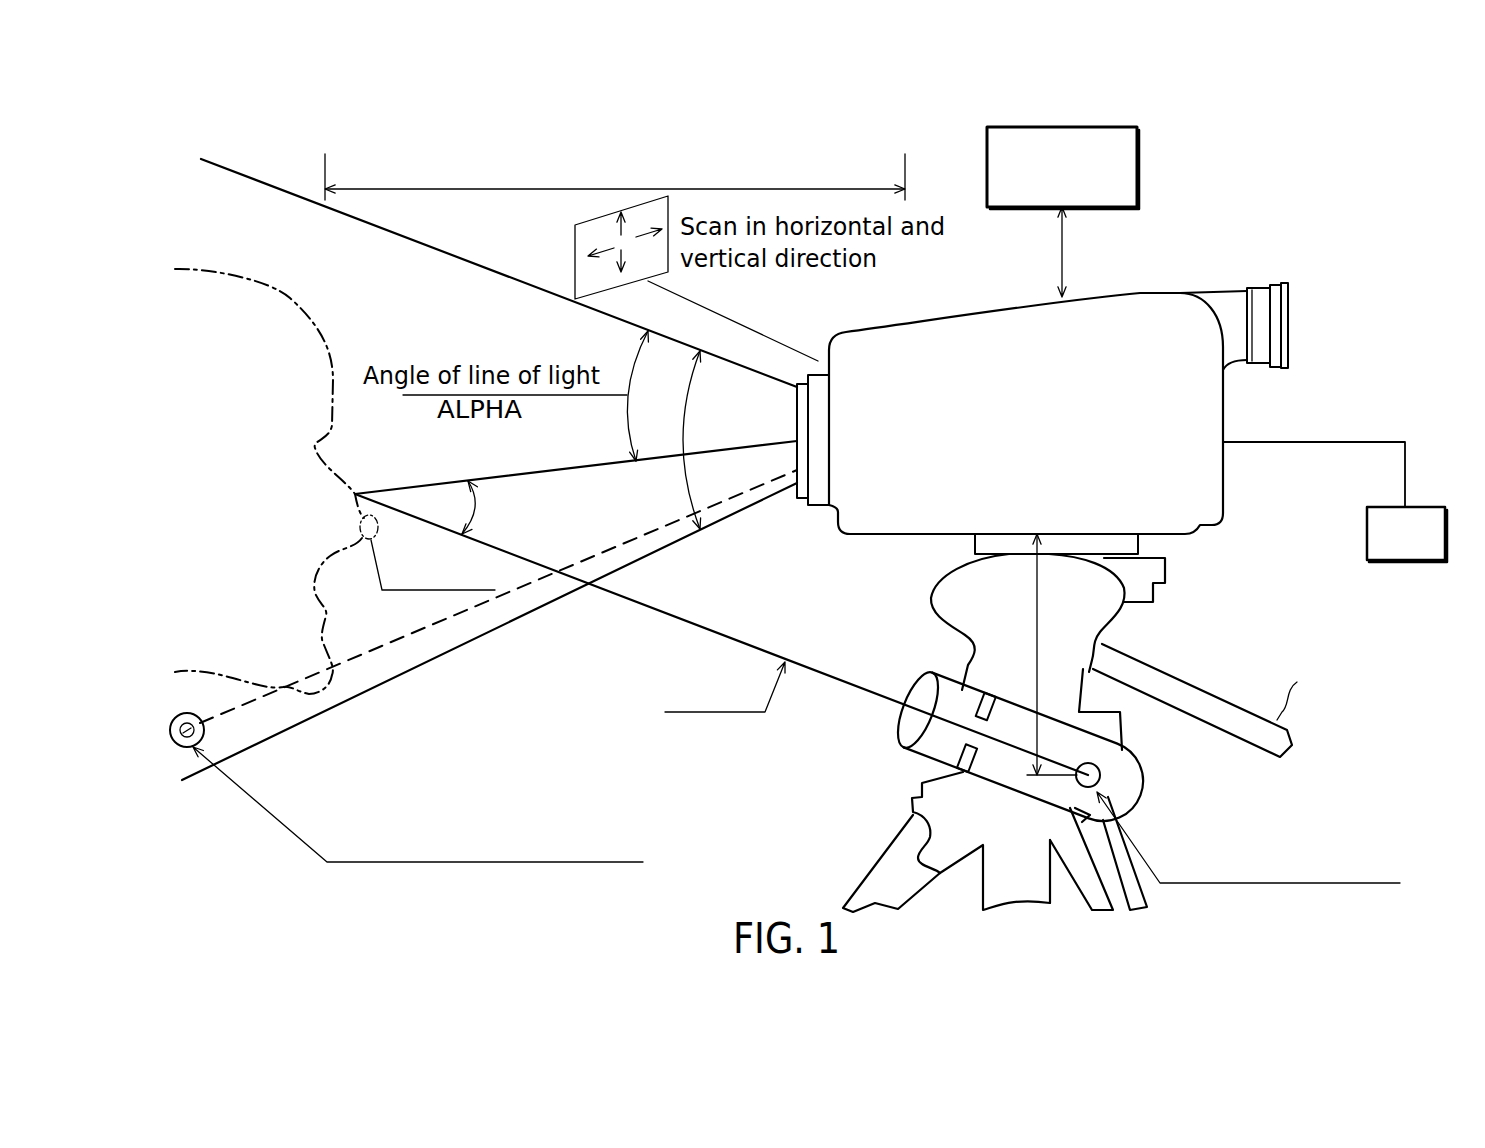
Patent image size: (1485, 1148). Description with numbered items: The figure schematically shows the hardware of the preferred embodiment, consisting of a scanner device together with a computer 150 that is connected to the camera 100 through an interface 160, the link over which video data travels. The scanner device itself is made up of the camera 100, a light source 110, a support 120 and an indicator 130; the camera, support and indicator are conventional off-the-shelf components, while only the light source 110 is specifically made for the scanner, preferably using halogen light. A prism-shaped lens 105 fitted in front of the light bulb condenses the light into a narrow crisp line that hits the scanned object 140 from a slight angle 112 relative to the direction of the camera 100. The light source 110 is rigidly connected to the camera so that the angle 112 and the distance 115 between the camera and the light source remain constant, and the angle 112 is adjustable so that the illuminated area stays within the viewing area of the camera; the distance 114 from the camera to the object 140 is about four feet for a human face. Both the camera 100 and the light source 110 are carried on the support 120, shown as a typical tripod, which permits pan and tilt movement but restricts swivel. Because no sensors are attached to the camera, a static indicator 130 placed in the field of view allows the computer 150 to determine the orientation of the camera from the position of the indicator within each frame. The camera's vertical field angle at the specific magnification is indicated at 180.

The camera 100 is at (1134, 293).
The lens 105 is at (927, 692).
The light source 110 is at (930, 750).
The angle 112 is at (480, 512).
The distance 114 is at (609, 189).
The distance 115 is at (1039, 617).
The support 120 is at (867, 878).
The indicator 130 is at (203, 735).
The scanned object 140 is at (300, 312).
The computer 150 is at (1407, 534).
The interface 160 is at (1347, 440).
The camera vertical field angle 180 is at (688, 418).